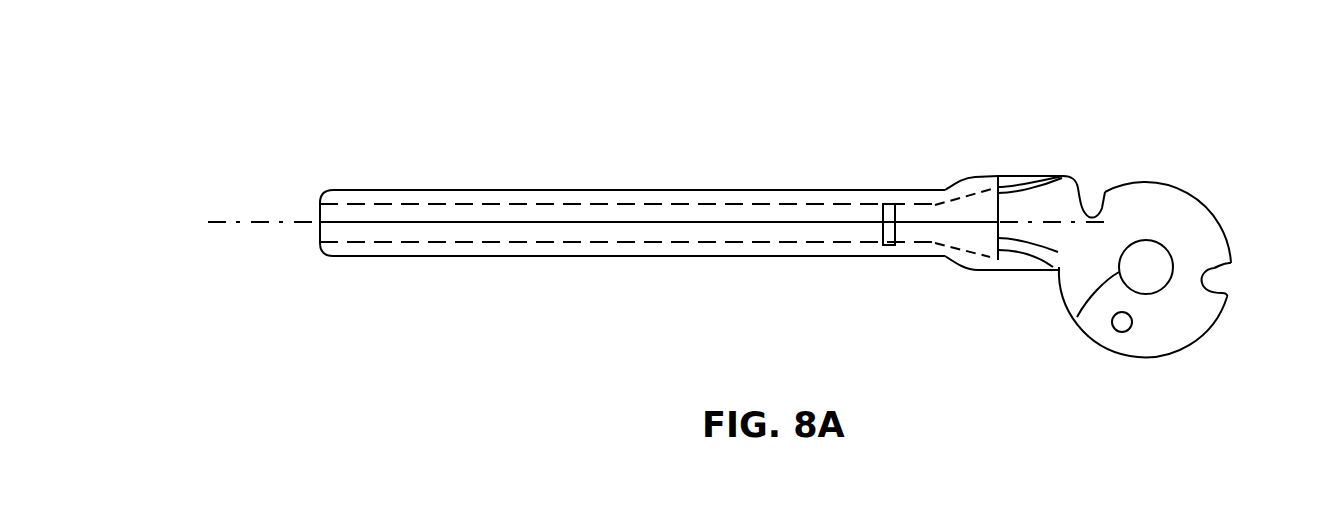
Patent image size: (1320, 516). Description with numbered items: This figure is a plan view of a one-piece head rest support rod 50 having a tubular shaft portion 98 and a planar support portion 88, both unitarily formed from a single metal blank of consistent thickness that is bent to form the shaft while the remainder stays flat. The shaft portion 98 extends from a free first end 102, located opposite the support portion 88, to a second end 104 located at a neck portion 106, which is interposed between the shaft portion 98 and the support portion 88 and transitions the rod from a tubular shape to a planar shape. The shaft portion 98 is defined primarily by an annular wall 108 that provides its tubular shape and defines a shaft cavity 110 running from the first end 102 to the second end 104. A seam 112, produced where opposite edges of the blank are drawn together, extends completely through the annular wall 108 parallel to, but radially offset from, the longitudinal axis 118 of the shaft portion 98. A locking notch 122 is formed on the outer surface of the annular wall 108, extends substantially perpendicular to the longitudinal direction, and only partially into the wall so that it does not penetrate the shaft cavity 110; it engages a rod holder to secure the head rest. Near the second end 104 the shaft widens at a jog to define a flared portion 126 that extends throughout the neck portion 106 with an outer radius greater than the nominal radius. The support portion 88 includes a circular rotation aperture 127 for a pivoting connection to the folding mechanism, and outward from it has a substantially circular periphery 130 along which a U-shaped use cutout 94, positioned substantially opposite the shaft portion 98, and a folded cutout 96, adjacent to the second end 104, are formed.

The support rod 50 is at (374, 92).
The support portion 88 is at (1213, 217).
The use cutout 94 is at (1216, 286).
The folded cutout 96 is at (1101, 207).
The shaft portion 98 is at (387, 190).
The first end 102 is at (318, 208).
The second end 104 is at (1055, 251).
The neck portion 106 is at (1075, 178).
The annular wall 108 is at (552, 190).
The shaft cavity 110 is at (540, 244).
The seam 112 is at (400, 245).
The longitudinal axis 118 is at (218, 224).
The locking notch 122 is at (882, 218).
The flared portion 126 is at (955, 185).
The circular rotation aperture 127 is at (1080, 317).
The substantially circular periphery 130 is at (1196, 342).